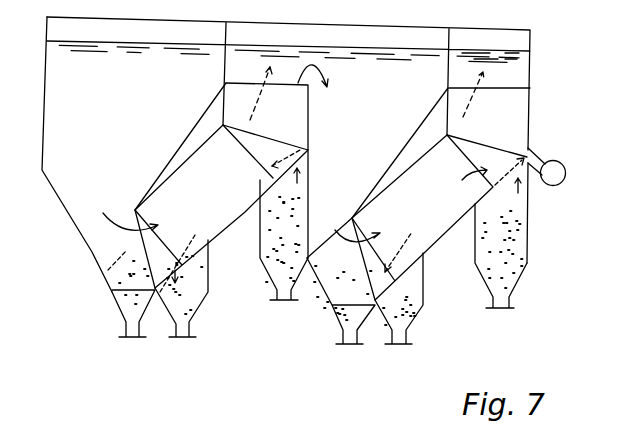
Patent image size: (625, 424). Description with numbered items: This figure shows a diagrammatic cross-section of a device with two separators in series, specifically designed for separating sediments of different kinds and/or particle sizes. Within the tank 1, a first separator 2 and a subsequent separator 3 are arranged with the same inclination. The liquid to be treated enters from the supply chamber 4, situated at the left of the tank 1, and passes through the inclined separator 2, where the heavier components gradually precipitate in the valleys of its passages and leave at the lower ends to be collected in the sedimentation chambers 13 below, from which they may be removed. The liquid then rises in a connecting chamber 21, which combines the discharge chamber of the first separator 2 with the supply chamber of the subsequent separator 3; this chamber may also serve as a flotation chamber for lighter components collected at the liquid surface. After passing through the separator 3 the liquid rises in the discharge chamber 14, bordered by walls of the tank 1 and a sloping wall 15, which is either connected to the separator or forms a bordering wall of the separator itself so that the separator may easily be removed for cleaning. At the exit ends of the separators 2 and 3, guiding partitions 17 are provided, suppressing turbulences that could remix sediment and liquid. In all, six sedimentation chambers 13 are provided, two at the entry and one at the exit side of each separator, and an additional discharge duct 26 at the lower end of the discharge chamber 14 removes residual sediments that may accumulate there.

The tank 1 is at (55, 206).
The separator 2 is at (218, 208).
The separator 3 is at (440, 218).
The supply chamber 4 is at (126, 130).
The sedimentation chamber 13 is at (135, 343).
The discharge chamber 14 is at (518, 73).
The sloping wall 15 is at (188, 128).
The guiding partition 17 is at (296, 117).
The connecting chamber 21 is at (383, 87).
The discharge duct 26 is at (566, 173).